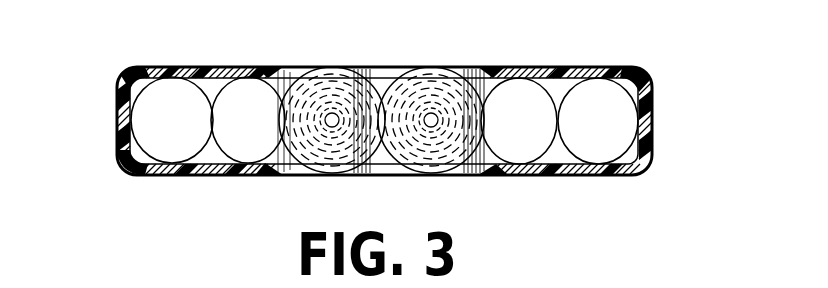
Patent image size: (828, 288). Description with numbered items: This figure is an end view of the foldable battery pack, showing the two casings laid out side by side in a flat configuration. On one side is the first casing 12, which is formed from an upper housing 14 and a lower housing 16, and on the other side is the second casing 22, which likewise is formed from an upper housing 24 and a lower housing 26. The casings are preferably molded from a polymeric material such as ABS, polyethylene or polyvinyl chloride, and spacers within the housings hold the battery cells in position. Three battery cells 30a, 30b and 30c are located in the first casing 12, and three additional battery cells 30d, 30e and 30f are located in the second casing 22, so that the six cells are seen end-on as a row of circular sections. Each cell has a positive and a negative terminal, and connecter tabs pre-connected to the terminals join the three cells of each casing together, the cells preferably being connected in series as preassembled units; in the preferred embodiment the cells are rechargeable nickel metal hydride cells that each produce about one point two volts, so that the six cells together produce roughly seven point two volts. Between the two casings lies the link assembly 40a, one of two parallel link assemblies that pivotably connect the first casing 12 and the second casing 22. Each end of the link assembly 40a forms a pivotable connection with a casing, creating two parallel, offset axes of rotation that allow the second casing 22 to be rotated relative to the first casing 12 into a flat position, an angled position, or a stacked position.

The first casing 12 is at (647, 88).
The upper housing 14 is at (532, 68).
The lower housing 16 is at (650, 155).
The second casing 22 is at (125, 72).
The upper housing 24 is at (192, 74).
The lower housing 26 is at (118, 150).
The battery cell 30a is at (600, 145).
The battery cell 30b is at (510, 133).
The battery cell 30c is at (423, 180).
The battery cell 30d is at (332, 173).
The battery cell 30e is at (243, 140).
The battery cell 30f is at (167, 143).
The link assembly 40a is at (381, 118).